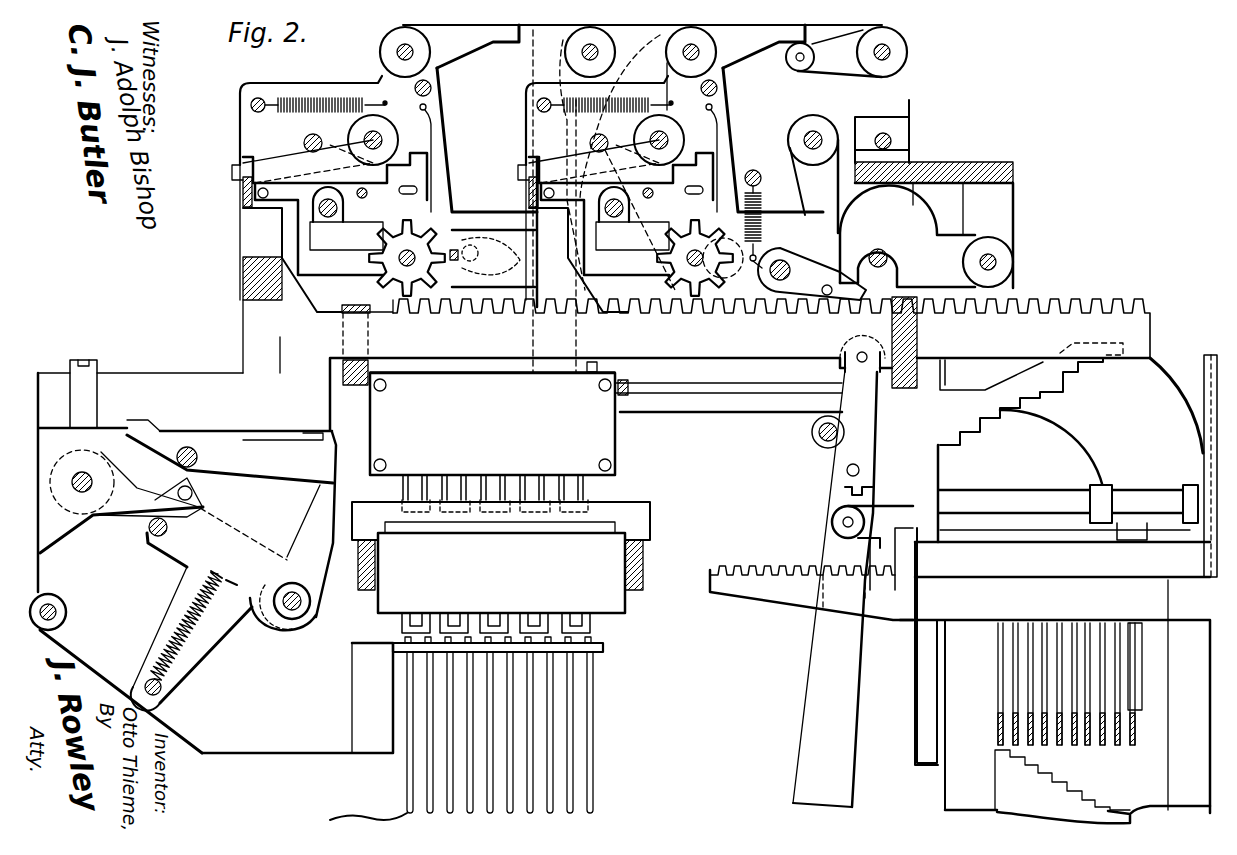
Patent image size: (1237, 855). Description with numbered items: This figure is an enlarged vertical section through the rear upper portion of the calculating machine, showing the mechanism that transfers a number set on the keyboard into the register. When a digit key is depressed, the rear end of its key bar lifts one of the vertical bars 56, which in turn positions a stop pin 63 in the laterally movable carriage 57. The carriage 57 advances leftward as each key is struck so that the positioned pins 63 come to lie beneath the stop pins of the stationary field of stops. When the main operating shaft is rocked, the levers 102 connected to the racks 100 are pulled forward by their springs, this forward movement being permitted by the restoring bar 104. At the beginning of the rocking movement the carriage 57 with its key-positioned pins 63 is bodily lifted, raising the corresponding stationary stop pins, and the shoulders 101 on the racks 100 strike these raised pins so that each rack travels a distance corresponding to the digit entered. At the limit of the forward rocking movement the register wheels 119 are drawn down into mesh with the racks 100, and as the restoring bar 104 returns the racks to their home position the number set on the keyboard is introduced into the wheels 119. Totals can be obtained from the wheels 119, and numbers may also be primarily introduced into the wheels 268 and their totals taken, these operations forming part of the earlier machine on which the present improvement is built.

The register wheels 119 is at (407, 282).
The wheels 268 is at (700, 273).
The shoulders 101 is at (600, 366).
The racks 100 is at (1036, 297).
The restoring bar 104 is at (812, 430).
The levers 102 is at (847, 462).
The carriage 57 is at (648, 545).
The stop pins 63 is at (592, 625).
The vertical bars 56 is at (575, 748).